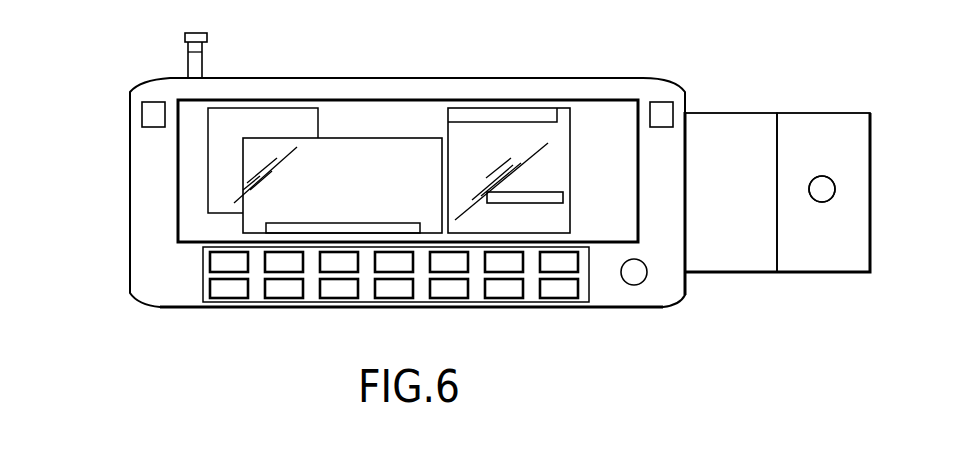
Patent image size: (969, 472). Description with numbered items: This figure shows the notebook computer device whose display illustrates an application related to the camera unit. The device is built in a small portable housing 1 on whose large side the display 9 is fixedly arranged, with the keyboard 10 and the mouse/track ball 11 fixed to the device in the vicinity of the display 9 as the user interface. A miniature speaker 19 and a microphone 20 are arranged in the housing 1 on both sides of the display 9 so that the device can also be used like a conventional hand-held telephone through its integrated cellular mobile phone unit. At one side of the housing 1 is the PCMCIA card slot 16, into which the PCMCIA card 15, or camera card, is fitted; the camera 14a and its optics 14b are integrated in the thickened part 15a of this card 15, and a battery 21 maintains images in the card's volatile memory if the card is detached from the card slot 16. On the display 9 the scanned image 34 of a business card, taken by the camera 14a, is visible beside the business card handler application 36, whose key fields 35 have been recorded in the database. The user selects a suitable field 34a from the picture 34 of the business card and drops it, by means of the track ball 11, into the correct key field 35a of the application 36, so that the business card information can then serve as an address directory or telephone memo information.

The housing 1 is at (283, 79).
The display 9 is at (339, 101).
The keyboard 10 is at (204, 262).
The mouse/track ball 11 is at (645, 282).
The camera 14a is at (822, 203).
The optics 14b is at (822, 189).
The PCMCIA card 15 is at (767, 113).
The thickened part of the card 15a is at (845, 118).
The PCMCIA card slot 16 is at (687, 139).
The miniature speaker 19 is at (143, 115).
The microphone 20 is at (665, 107).
The battery 21 is at (188, 53).
The scanned image of the business card 34 is at (408, 139).
The suitable field 34a is at (268, 228).
The key fields 35 is at (565, 108).
The correct key field 35a is at (539, 198).
The business card handler application 36 is at (207, 132).